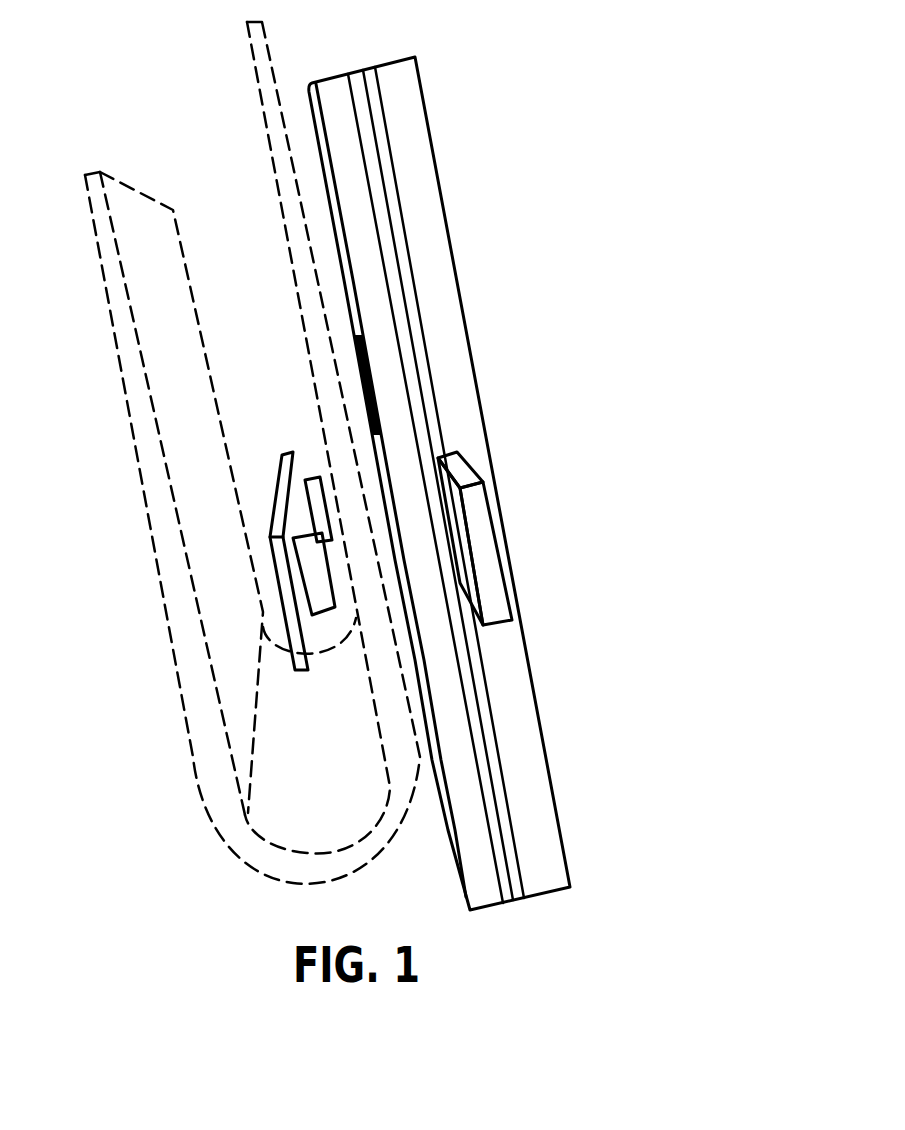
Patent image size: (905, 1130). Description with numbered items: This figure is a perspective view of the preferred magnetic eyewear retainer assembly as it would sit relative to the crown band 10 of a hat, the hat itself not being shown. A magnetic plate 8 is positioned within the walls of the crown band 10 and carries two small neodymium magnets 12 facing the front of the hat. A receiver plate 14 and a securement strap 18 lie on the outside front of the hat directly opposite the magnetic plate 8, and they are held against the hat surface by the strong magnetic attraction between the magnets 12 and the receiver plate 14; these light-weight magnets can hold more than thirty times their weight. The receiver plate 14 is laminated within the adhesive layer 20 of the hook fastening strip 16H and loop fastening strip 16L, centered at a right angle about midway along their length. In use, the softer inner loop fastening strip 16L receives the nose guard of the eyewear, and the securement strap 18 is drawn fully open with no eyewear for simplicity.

The magnetic plate 8 is at (285, 488).
The hat crown band 10 is at (263, 137).
The neodymium magnet 12 is at (315, 580).
The receiver plate 14 is at (480, 533).
The hook fastening strip 16H is at (363, 249).
The loop fastening strip 16L is at (450, 333).
The securement strap 18 is at (458, 108).
The adhesive layer 20 is at (490, 713).